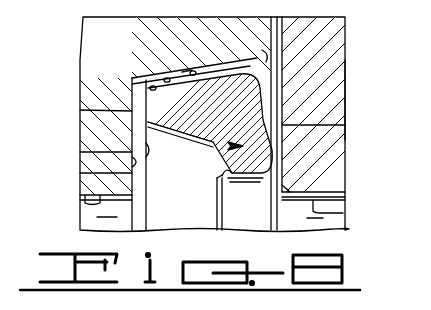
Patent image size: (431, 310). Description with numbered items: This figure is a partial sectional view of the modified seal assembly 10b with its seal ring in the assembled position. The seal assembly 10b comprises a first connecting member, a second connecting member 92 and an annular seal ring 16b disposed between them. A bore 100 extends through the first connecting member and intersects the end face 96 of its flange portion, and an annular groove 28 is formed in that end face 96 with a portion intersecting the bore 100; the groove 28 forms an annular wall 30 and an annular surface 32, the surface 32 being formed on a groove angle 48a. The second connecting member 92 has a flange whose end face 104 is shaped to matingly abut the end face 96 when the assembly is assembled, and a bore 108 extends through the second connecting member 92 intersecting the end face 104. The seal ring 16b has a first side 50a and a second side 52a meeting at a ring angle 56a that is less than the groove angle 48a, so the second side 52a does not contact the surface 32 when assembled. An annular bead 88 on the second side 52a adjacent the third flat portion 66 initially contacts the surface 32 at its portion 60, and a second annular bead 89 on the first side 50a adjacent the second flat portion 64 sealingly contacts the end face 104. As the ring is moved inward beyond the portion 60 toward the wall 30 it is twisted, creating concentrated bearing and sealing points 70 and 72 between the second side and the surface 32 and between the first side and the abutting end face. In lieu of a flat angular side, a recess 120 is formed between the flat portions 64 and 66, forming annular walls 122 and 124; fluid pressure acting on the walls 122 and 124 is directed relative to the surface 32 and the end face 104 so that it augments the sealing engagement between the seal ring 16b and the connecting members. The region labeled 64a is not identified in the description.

The modified seal assembly 10b is at (275, 13).
The concentrated bearing and sealing point 70 is at (153, 75).
The annular bead 88 is at (152, 76).
The groove angle 48a is at (133, 85).
The portion of the surface 60 is at (187, 70).
The second side 52a is at (196, 66).
The annular surface 32 is at (262, 50).
The end face 96 is at (279, 33).
The first side 50a is at (278, 86).
The second connecting member 92 is at (345, 104).
The end face 104 is at (345, 125).
The second annular bead 89 is at (277, 154).
The concentrated bearing and sealing point 72 is at (284, 166).
The bore 108 is at (343, 207).
The annular groove 28 is at (82, 153).
The annular wall 30 is at (82, 174).
The bore 100 is at (85, 200).
The third flat portion 66 is at (133, 111).
The recess 120 is at (133, 133).
The annular wall 124 is at (186, 150).
The annular wall 122 is at (222, 171).
The annular seal ring 16b is at (219, 180).
The second flat portion 64 is at (249, 186).
The filler block 64a is at (205, 126).
The ring angle 56a is at (163, 100).